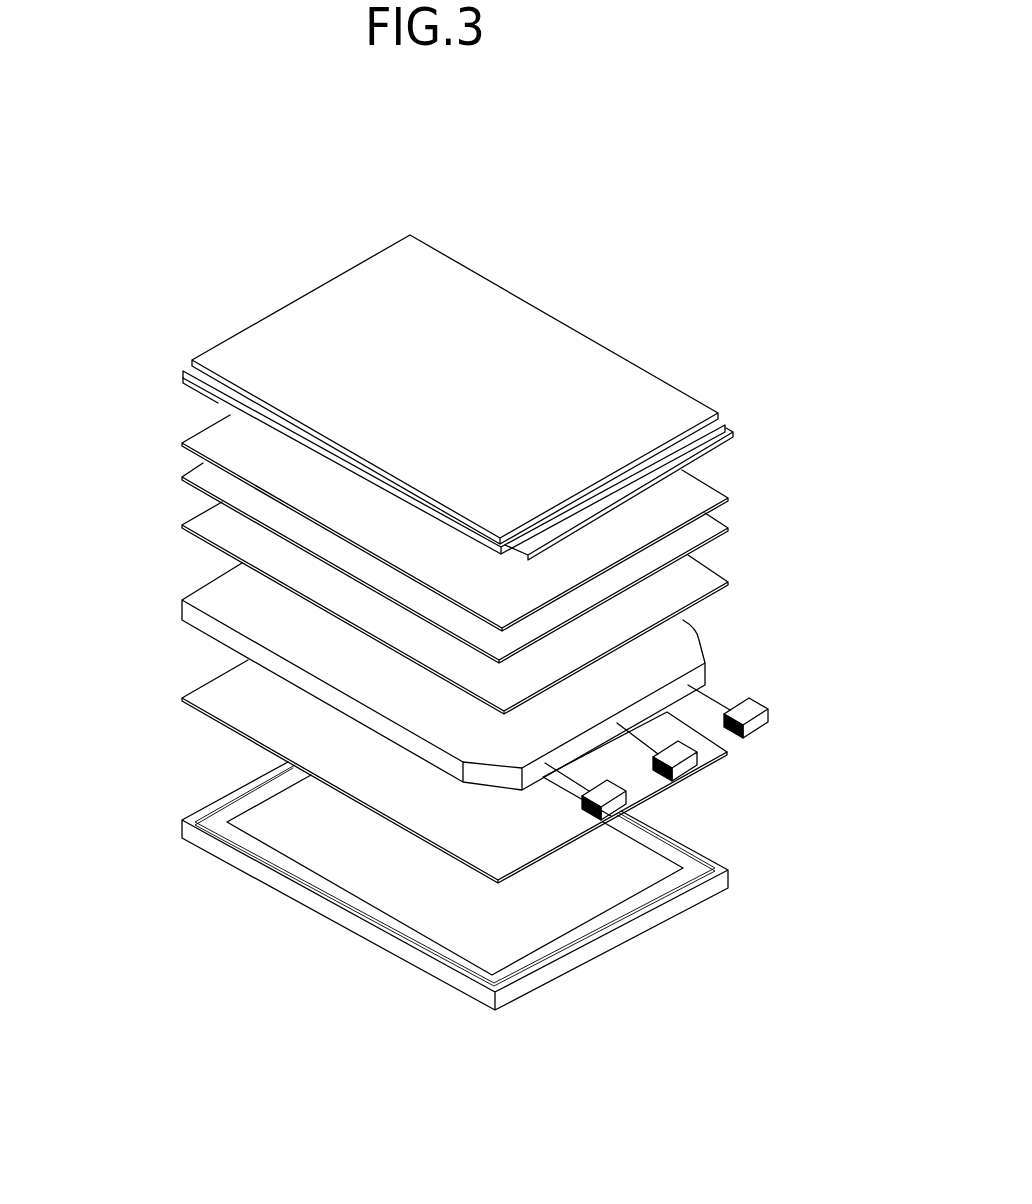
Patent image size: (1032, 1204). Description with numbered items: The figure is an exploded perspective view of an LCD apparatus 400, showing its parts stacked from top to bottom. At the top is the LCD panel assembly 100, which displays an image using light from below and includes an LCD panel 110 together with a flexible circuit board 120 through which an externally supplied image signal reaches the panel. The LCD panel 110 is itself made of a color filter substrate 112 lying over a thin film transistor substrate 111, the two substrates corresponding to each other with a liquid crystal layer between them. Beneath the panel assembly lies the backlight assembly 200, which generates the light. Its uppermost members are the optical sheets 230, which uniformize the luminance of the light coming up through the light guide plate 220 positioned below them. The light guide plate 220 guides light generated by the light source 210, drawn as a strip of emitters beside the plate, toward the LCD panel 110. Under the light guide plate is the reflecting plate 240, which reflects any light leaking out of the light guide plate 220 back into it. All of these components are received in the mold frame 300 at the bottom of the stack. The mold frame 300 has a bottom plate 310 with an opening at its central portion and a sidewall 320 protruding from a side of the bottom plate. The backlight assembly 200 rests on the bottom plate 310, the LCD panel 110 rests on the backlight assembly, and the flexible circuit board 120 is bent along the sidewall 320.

The LCD apparatus 400 is at (632, 181).
The LCD panel assembly 100 is at (205, 291).
The LCD panel 110 is at (78, 340).
The color filter substrate 112 is at (193, 361).
The thin film transistor (TFT) substrate 111 is at (183, 373).
The flexible circuit board 120 is at (736, 433).
The backlight assembly 200 is at (860, 826).
The optical sheets 230 is at (172, 437).
The light guide plate 220 is at (223, 588).
The reflecting plate 240 is at (223, 689).
The light source 210 is at (778, 738).
The mold frame 300 is at (737, 874).
The sidewall 320 is at (625, 930).
The bottom plate 310 is at (543, 950).